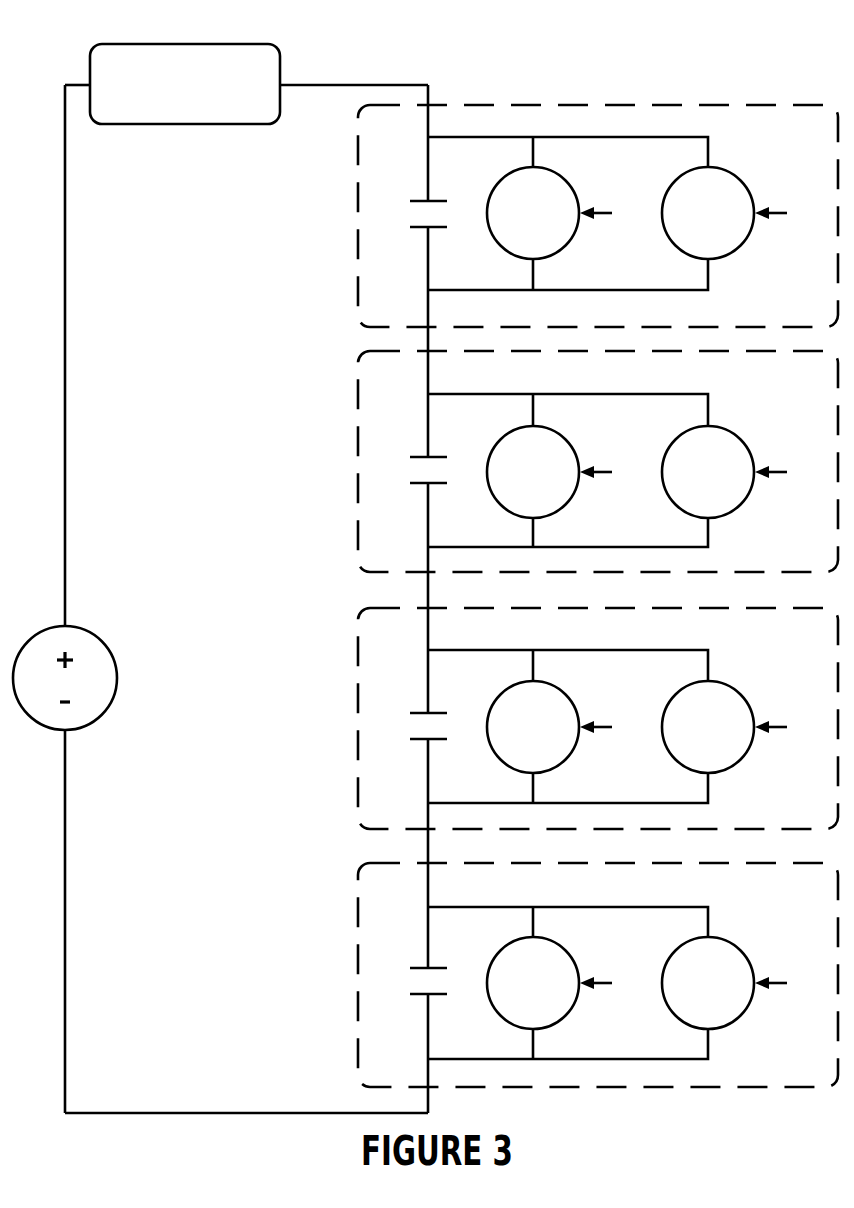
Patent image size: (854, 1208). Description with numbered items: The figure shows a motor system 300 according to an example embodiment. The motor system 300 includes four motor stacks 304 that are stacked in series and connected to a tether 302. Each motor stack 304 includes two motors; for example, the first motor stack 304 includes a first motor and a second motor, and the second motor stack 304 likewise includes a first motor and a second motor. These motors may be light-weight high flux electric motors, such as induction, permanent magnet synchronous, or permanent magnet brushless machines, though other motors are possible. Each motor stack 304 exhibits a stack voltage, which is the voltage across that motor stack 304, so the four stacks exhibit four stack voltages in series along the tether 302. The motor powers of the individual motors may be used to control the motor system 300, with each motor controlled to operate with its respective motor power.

The motor system 300 is at (482, 53).
The tether 302 is at (185, 84).
The motor stack 304 is at (358, 157).